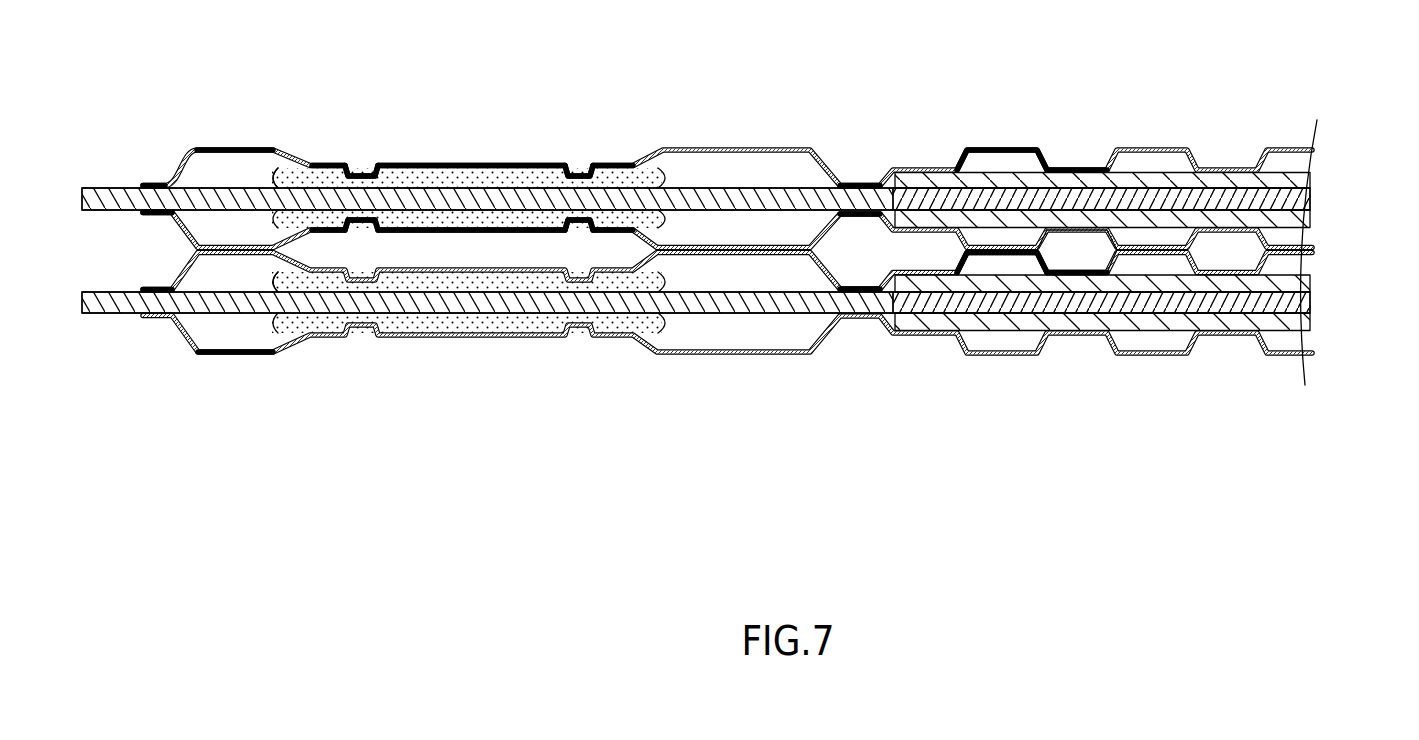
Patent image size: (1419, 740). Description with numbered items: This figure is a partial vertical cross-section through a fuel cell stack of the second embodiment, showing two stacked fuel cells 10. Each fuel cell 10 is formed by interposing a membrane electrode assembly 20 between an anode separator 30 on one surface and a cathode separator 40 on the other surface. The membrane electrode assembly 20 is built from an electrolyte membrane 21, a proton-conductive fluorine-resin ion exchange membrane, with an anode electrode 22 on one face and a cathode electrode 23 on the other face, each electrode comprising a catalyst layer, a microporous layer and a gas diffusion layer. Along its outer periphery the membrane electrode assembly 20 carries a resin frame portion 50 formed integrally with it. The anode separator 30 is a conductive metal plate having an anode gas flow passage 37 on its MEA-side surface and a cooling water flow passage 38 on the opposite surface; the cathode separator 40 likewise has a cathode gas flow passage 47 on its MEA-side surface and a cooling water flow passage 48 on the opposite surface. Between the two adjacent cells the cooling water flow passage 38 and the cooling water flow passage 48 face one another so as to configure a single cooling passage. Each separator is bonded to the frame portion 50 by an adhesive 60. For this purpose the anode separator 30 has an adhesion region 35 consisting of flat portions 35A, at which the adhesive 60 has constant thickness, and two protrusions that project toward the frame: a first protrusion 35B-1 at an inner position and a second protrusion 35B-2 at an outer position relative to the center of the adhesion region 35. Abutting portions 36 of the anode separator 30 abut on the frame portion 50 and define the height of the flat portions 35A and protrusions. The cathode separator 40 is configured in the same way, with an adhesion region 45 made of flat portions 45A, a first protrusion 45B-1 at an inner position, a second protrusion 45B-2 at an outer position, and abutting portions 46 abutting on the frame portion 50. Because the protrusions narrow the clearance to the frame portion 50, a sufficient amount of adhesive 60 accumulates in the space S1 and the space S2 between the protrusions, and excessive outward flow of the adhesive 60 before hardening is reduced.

The fuel cell 10 is at (104, 150).
The membrane electrode assembly 20 is at (1378, 150).
The electrolyte membrane 21 is at (1295, 199).
The anode electrode 22 is at (1295, 179).
The cathode electrode 23 is at (1295, 219).
The anode separator 30 is at (741, 148).
The adhesion region 35 is at (297, 88).
The flat portion 35A is at (330, 163).
The first protrusion 35B-1 is at (574, 168).
The second protrusion 35B-2 is at (367, 172).
The abutting portion 36 is at (159, 178).
The anode gas flow passage 37 is at (971, 160).
The cooling water flow passage 38 is at (1045, 165).
The cathode separator 40 is at (783, 246).
The adhesion region 45 is at (297, 425).
The flat portion 45A is at (331, 233).
The first protrusion 45B-1 is at (572, 224).
The second protrusion 45B-2 is at (361, 226).
The abutting portion 46 is at (157, 216).
The cathode gas flow passage 47 is at (975, 238).
The cooling water flow passage 48 is at (1112, 238).
The frame portion 50 is at (228, 148).
The adhesive 60 is at (287, 175).
The space S1 is at (505, 180).
The space S2 is at (510, 222).